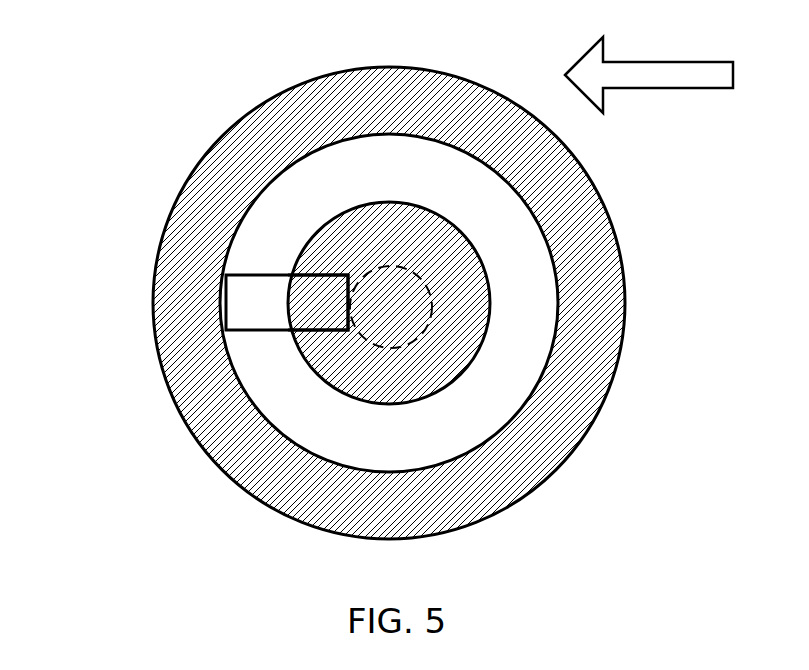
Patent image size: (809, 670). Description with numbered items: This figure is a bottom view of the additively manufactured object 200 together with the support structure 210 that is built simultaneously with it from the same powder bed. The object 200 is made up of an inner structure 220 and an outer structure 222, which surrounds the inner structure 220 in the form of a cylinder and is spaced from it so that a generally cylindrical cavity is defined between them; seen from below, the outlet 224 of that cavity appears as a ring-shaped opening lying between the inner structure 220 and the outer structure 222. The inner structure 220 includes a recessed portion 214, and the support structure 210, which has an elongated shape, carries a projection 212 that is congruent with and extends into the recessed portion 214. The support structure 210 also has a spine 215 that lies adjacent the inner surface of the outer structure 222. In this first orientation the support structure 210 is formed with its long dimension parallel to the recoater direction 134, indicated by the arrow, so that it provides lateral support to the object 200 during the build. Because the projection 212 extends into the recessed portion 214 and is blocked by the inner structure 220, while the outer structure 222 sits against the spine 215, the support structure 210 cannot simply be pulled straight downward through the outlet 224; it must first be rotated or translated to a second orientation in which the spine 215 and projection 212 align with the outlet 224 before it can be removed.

The object 200 is at (394, 285).
The outer structure 222 is at (226, 144).
The outlet 224 is at (280, 390).
The inner structure 220 is at (467, 368).
The recessed portion 214 is at (432, 300).
The support structure 210 is at (192, 233).
The spine 215 is at (207, 233).
The projection 212 is at (327, 276).
The recoater direction 134 is at (588, 53).